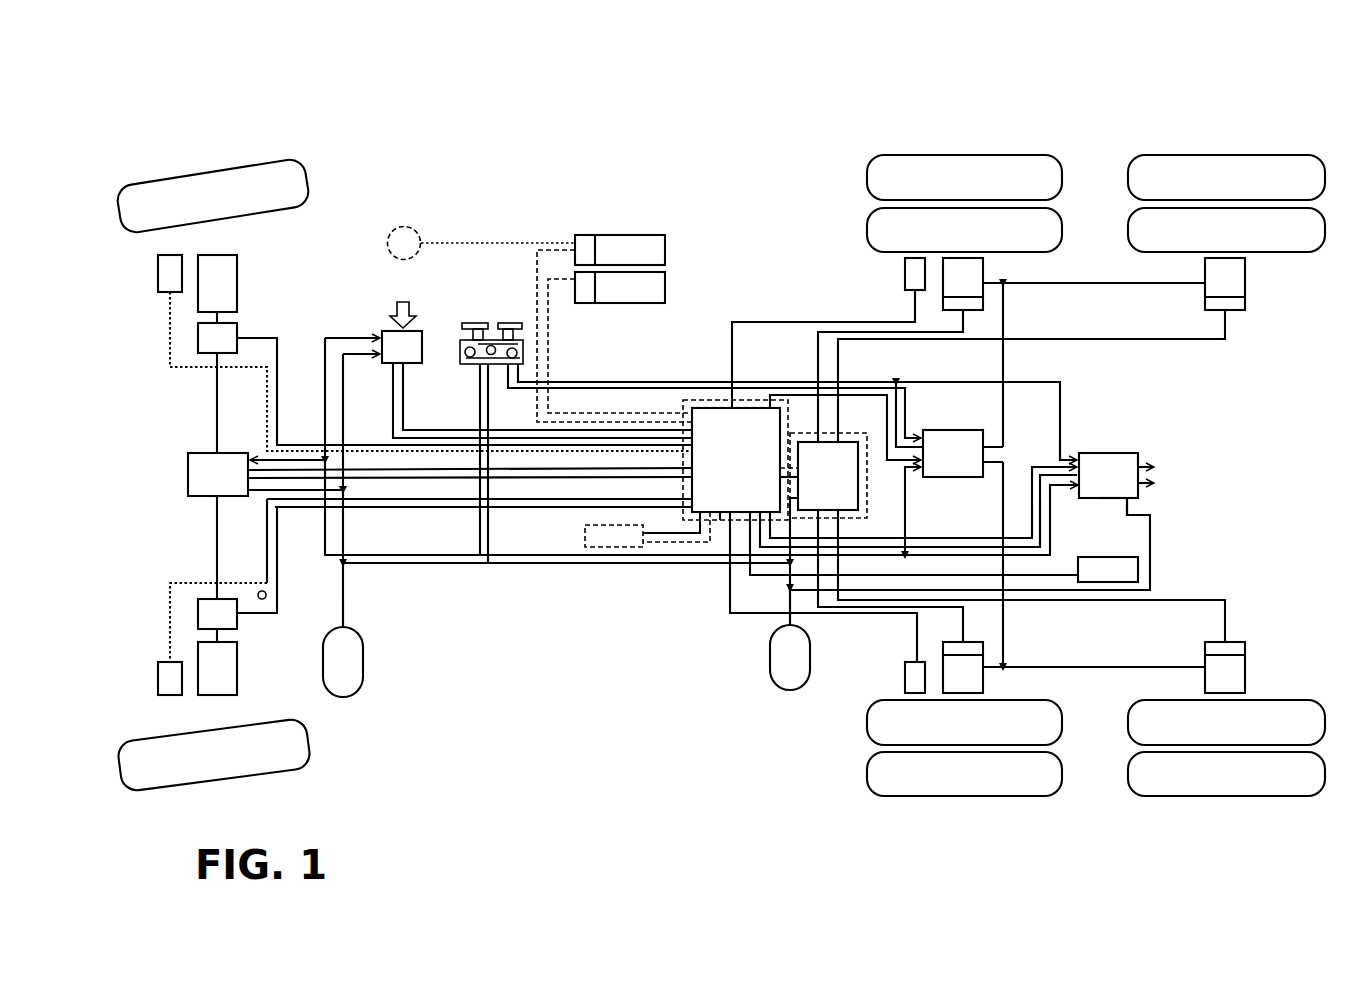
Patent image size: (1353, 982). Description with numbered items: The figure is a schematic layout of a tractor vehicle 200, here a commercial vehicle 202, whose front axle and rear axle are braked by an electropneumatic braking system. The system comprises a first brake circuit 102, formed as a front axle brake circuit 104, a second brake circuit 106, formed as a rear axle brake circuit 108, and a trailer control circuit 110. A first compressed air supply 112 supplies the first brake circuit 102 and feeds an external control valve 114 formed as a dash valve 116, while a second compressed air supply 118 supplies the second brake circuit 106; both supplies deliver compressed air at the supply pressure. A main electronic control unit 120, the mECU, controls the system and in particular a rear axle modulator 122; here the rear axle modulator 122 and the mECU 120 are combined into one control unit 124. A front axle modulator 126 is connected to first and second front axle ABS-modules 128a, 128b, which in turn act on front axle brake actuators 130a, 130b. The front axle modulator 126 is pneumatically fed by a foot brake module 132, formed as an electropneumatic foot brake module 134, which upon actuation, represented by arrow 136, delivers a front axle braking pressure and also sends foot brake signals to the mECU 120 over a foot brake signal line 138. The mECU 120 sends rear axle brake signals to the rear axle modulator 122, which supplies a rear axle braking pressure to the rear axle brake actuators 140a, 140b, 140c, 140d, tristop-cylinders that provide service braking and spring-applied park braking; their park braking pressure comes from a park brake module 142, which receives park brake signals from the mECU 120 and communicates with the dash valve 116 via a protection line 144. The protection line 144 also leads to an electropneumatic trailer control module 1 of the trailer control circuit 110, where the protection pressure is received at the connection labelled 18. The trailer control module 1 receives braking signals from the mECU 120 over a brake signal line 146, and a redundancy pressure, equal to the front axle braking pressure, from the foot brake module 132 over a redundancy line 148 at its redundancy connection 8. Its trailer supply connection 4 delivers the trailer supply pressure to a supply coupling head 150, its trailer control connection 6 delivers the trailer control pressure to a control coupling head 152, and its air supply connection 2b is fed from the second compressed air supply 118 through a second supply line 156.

The electropneumatic trailer control module 1 is at (1110, 498).
The air supply connection 2b is at (1130, 504).
The trailer supply connection 4 is at (1200, 437).
The trailer control connection 6 is at (1219, 523).
The redundancy connection 8 is at (1078, 582).
The parking brake pressure input pPR 18 is at (1073, 452).
The first brake circuit 102 is at (490, 272).
The front axle brake circuit 104 is at (362, 221).
The second brake circuit 106 is at (943, 391).
The rear axle brake circuit 108 is at (808, 251).
The trailer control circuit 110 is at (1144, 429).
The first compressed air supply 112 is at (363, 662).
The external control valve 114 is at (768, 383).
The dash valve 116 is at (465, 340).
The second compressed air supply 118 is at (790, 692).
The main electronic control unit 120 is at (720, 516).
The rear axle modulator 122 is at (808, 440).
The control unit 124 is at (695, 408).
The front axle modulator 126 is at (188, 478).
The first front axle ABS-module 128a is at (198, 350).
The second front axle ABS-module 128b is at (198, 612).
The front axle brake actuator 130a is at (198, 300).
The front axle brake actuator 130b is at (198, 655).
The foot brake module 132 is at (355, 314).
The electropneumatic foot brake module 134 is at (380, 336).
The arrow 136 is at (410, 299).
The foot brake signal line 138 is at (542, 400).
The rear axle brake actuator 140a is at (985, 270).
The rear axle brake actuator 140b is at (985, 685).
The rear axle brake actuator 140c is at (1245, 270).
The rear axle brake actuator 140d is at (1245, 680).
The park brake module 142 is at (968, 478).
The protection line 144 is at (600, 382).
The brake signal line 146 is at (1040, 505).
The redundancy line 148 is at (1020, 557).
The supply coupling head 150 is at (1160, 467).
The control coupling head 152 is at (1160, 483).
The second supply line 156 is at (795, 591).
The tractor vehicle 200 is at (906, 690).
The commercial vehicle 202 is at (663, 741).